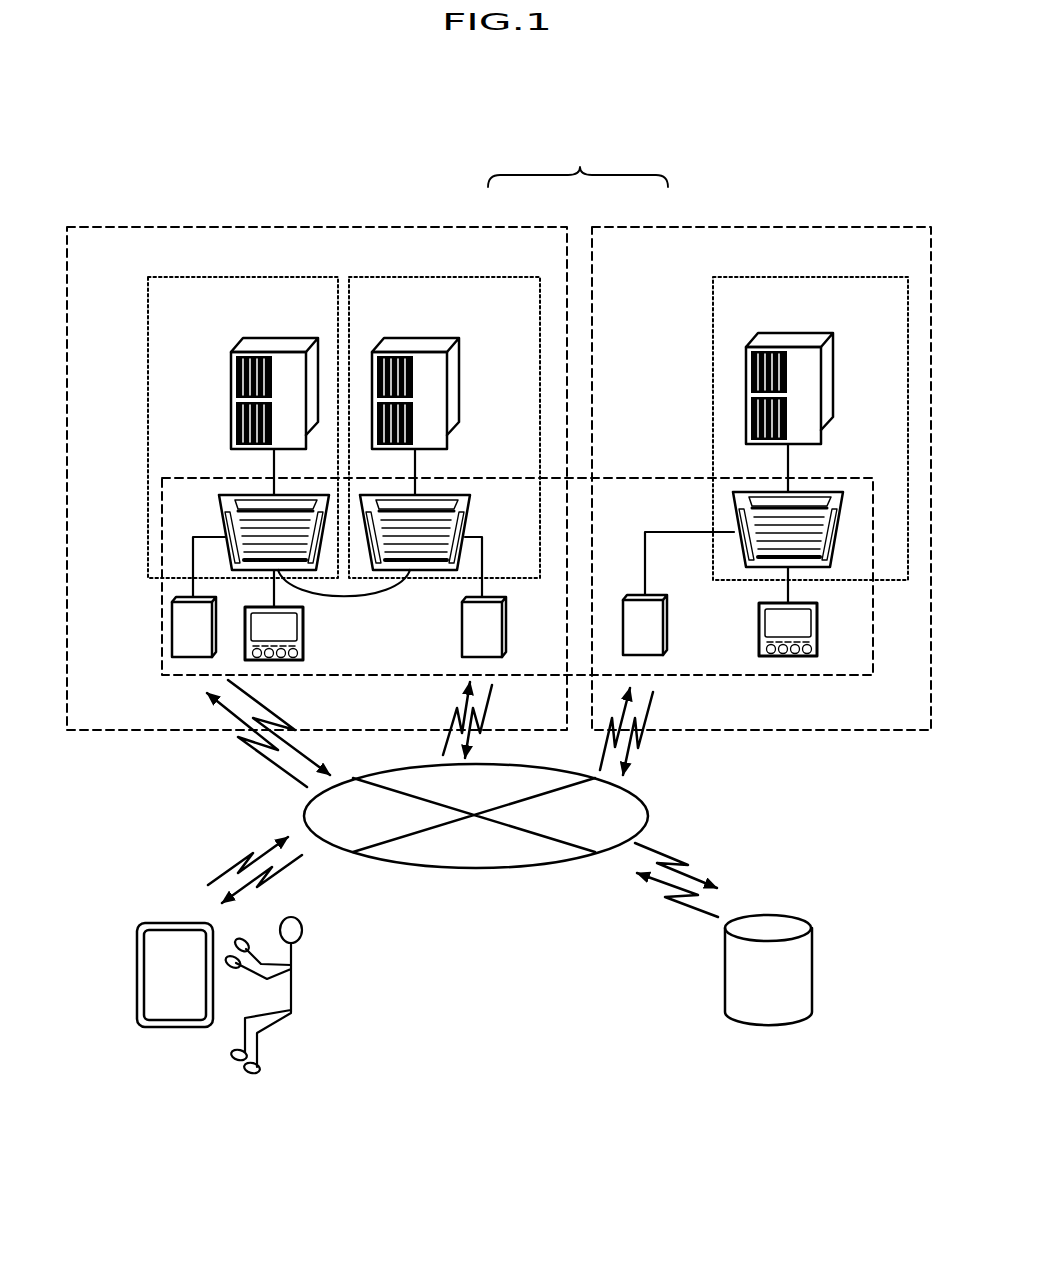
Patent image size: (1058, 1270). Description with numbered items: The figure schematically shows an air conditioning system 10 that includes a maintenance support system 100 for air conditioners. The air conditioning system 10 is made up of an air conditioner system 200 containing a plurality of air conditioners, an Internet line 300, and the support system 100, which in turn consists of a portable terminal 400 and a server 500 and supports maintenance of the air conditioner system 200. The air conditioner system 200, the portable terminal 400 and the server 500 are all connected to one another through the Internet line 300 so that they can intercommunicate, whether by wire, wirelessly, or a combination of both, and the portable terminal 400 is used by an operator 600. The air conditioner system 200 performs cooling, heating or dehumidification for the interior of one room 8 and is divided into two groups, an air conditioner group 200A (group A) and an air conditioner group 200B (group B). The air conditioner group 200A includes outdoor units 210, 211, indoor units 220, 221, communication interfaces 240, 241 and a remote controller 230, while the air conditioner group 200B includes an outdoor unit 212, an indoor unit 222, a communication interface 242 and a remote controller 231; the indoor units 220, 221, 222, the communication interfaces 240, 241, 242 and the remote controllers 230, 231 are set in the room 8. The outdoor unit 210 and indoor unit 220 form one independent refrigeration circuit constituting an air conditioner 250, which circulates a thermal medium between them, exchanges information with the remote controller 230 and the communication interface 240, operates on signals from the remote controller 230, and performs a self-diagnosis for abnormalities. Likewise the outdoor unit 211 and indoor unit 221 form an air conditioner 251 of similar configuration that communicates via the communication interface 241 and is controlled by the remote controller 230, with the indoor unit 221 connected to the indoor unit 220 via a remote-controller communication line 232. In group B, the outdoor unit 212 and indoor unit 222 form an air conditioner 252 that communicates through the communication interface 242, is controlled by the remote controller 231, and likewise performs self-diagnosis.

The air conditioning system 10 is at (235, 158).
The maintenance support system 100 is at (457, 1075).
The air conditioner system 200 is at (578, 164).
The air conditioner group 200A is at (526, 227).
The air conditioner group 200B is at (634, 227).
The room 8 is at (160, 658).
The air conditioner 250 is at (283, 277).
The air conditioner 251 is at (485, 277).
The air conditioner 252 is at (851, 277).
The outdoor unit 210 is at (231, 392).
The outdoor unit 211 is at (459, 393).
The outdoor unit 212 is at (833, 394).
The indoor unit 220 is at (230, 495).
The indoor unit 221 is at (466, 495).
The indoor unit 222 is at (836, 492).
The remote controller 230 is at (295, 660).
The remote controller 231 is at (785, 658).
The remote-controller communication line 232 is at (343, 597).
The communication interface 240 is at (172, 624).
The communication interface 241 is at (462, 624).
The communication interface 242 is at (667, 625).
The Internet line 300 is at (648, 816).
The portable terminal 400 is at (175, 1028).
The server 500 is at (768, 1013).
The operator 600 is at (292, 990).